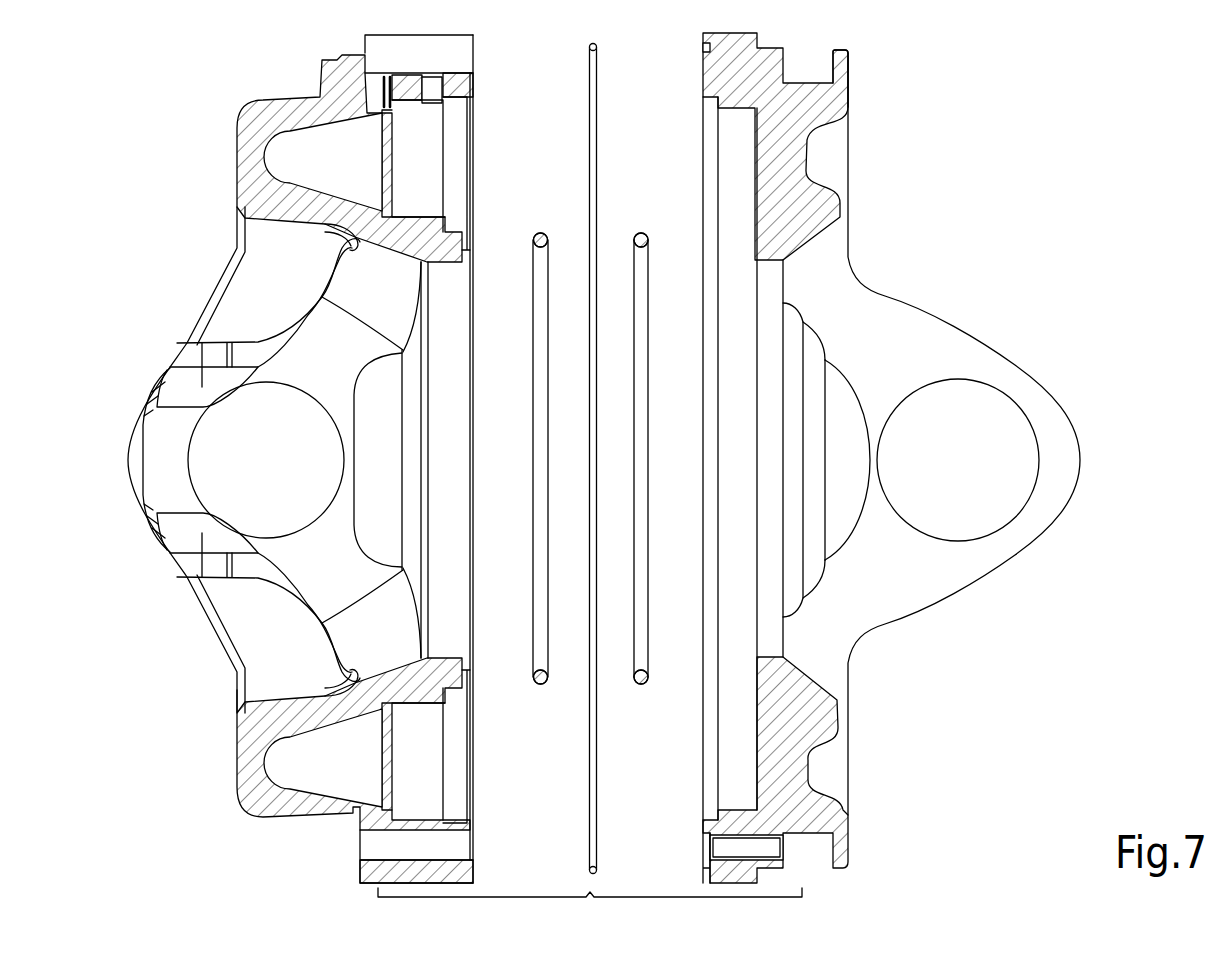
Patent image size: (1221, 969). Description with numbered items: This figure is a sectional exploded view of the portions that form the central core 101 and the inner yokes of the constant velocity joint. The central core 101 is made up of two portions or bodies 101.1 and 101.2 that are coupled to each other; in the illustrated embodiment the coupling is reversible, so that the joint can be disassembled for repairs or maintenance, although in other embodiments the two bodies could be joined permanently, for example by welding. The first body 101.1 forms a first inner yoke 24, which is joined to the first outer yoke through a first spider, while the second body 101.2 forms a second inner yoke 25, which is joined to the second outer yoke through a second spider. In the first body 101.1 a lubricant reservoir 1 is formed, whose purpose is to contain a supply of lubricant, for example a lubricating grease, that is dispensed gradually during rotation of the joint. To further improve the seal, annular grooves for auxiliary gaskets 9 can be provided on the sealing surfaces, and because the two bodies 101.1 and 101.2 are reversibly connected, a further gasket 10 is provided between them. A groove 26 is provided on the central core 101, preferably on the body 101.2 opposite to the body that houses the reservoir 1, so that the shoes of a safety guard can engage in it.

The lubricant reservoir 1 is at (288, 160).
The annular grooves for auxiliary gaskets 9 is at (533, 241).
The gasket 10 is at (588, 47).
The first inner yoke 24 is at (238, 312).
The second inner yoke 25 is at (888, 318).
The groove 26 is at (810, 83).
The central core 101 is at (590, 906).
The first body 101.1 is at (300, 459).
The second body 101.2 is at (891, 449).